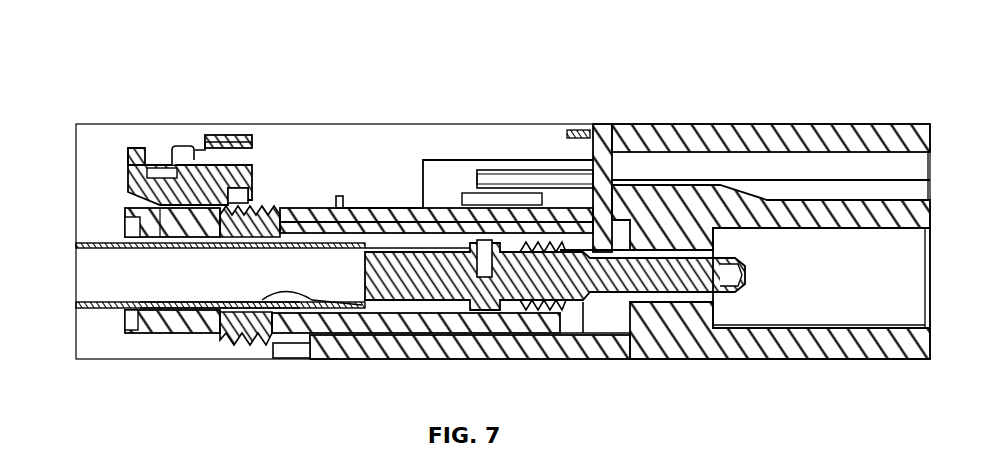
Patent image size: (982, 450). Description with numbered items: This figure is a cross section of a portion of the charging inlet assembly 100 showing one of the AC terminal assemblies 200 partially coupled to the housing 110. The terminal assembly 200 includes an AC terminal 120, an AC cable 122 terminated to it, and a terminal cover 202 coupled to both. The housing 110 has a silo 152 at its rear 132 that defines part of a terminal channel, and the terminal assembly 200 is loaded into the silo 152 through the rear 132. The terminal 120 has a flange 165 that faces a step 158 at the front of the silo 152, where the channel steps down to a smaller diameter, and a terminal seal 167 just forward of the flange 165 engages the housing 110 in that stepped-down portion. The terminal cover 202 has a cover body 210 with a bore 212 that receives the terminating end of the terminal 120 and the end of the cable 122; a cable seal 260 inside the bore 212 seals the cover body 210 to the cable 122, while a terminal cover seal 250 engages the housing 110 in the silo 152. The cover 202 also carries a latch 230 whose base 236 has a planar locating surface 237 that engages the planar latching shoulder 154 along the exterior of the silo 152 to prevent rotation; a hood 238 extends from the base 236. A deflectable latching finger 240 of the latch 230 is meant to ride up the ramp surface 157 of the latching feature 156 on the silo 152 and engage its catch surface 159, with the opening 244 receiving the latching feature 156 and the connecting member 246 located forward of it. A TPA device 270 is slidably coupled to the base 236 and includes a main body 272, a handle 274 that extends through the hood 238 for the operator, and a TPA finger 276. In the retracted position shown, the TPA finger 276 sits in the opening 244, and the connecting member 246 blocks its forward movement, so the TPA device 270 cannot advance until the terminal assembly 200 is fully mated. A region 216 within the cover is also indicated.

The charging inlet assembly 100 is at (528, 82).
The housing 110 is at (723, 143).
The AC terminal 120 is at (675, 285).
The AC cable 122 is at (93, 290).
The rear 132 is at (263, 345).
The silo 152 is at (423, 160).
The latching shoulder 154 is at (398, 212).
The latching feature 156 is at (343, 208).
The ramp surface 157 is at (319, 194).
The step 158 is at (625, 222).
The catch surface 159 is at (387, 230).
The flange 165 is at (503, 222).
The terminal seal 167 is at (540, 307).
The AC terminal assembly 200 is at (184, 105).
The terminal cover 202 is at (190, 216).
The cover body 210 is at (400, 337).
The bore 212 is at (449, 318).
The cavity 216 is at (606, 324).
The latch 230 is at (233, 112).
The base 236 is at (152, 308).
The locating surface 237 is at (178, 310).
The hood 238 is at (245, 190).
The latching finger 240 is at (238, 195).
The opening 244 is at (223, 216).
The connecting member 246 is at (250, 197).
The terminal cover seal 250 is at (258, 338).
The cable seal 260 is at (332, 327).
The TPA device 270 is at (120, 153).
The main body 272 is at (163, 173).
The handle 274 is at (137, 148).
The TPA finger 276 is at (218, 160).